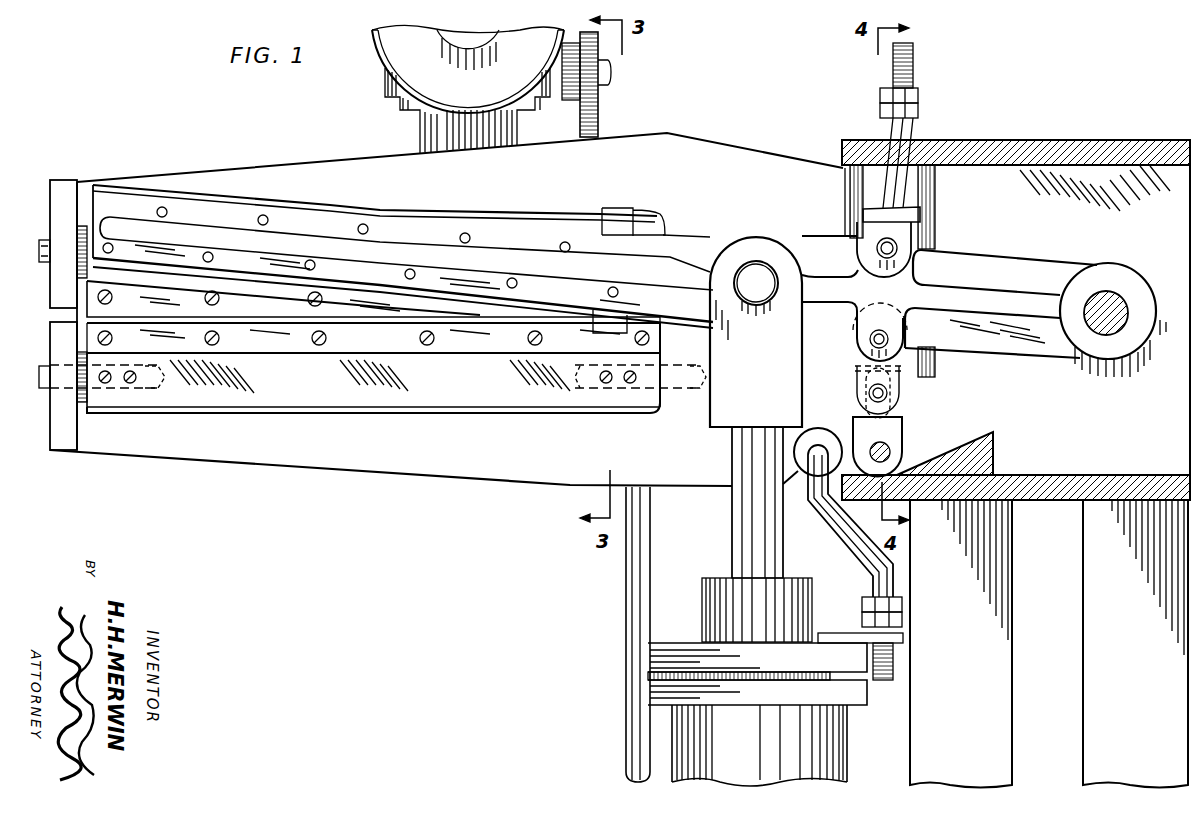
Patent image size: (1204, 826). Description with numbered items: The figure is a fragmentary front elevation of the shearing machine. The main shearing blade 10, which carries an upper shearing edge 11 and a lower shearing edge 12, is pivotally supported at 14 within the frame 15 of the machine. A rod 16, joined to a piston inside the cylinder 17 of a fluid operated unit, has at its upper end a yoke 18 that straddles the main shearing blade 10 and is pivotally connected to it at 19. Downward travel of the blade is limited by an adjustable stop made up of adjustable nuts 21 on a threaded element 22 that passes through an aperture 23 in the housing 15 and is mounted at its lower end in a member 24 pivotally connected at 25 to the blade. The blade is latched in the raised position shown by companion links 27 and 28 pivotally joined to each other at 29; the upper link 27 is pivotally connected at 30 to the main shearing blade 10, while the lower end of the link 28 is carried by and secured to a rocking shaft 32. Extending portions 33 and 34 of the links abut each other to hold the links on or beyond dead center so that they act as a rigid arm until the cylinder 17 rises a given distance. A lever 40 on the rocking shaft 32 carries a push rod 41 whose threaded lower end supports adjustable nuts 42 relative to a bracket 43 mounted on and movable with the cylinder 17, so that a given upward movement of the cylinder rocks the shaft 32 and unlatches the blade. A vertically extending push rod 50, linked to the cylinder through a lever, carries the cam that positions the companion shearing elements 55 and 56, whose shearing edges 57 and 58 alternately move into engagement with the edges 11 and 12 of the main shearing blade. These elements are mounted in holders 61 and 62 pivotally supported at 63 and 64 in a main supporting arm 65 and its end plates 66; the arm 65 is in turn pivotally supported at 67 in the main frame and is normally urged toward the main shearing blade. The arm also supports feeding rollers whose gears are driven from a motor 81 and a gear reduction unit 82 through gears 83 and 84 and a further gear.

The main shearing blade 10 is at (345, 232).
The upper shearing edge 11 is at (193, 186).
The lower shearing edge 12 is at (247, 284).
The pivot 14 is at (1107, 300).
The frame 15 is at (1115, 142).
The rod 16 is at (735, 506).
The cylinder 17 is at (838, 752).
The yoke 18 is at (722, 282).
The pivotal connection 19 is at (756, 269).
The adjustable nuts 21 is at (918, 98).
The threaded element 22 is at (913, 63).
The aperture 23 is at (905, 160).
The member 24 is at (863, 222).
The pivotal connection 25 is at (877, 247).
The upper link 27 is at (890, 394).
The lower link 28 is at (902, 420).
The pivotal connection 29 is at (868, 393).
The pivotal connection 30 is at (887, 340).
The rocking shaft 32 is at (878, 462).
The extending portion 33 is at (855, 367).
The extending portion 34 is at (903, 369).
The lever 40 is at (846, 438).
The push rod 41 is at (868, 567).
The adjustable nuts 42 is at (903, 622).
The bracket 43 is at (856, 636).
The push rod 50 is at (630, 610).
The companion shearing element 55 is at (238, 320).
The companion shearing element 56 is at (388, 347).
The shearing edge 57 is at (190, 330).
The shearing edge 58 is at (192, 320).
The holder 61 is at (112, 280).
The holder 62 is at (258, 395).
The pivot 63 is at (42, 246).
The pivot 64 is at (44, 386).
The main supporting arm 65 is at (392, 468).
The end plates 66 is at (56, 278).
The pivotal support 67 is at (936, 233).
The motor 81 is at (375, 42).
The gear reduction unit 82 is at (418, 144).
The gear 83 is at (598, 100).
The gear 84 is at (598, 128).